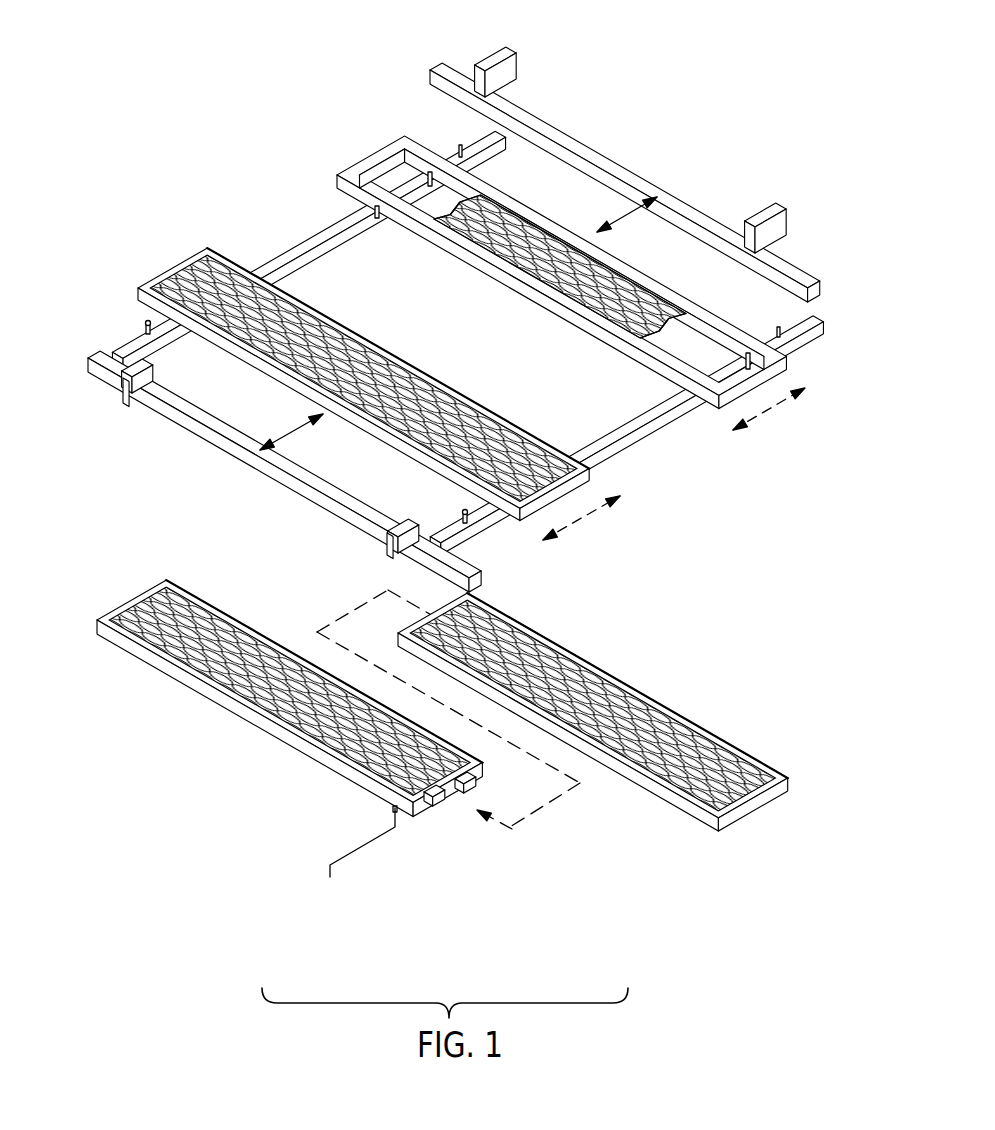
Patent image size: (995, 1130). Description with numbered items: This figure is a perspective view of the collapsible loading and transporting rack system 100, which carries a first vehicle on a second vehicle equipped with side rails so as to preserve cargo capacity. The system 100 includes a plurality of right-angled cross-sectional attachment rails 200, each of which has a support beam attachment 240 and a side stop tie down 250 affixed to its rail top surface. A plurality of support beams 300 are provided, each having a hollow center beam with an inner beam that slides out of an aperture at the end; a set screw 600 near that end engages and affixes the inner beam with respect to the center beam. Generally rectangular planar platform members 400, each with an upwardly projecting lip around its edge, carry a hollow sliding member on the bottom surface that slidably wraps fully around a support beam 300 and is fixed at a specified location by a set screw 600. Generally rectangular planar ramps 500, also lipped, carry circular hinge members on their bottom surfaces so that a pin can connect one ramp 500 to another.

The collapsible loading and transporting rack system 100 is at (245, 87).
The attachment rail 200 is at (448, 68).
The support beam attachment 240 is at (767, 238).
The side stop tie down 250 is at (515, 64).
The support beam 300 is at (633, 427).
The platform member 400 is at (215, 290).
The ramp 500 is at (687, 740).
The set screw 600 is at (462, 514).